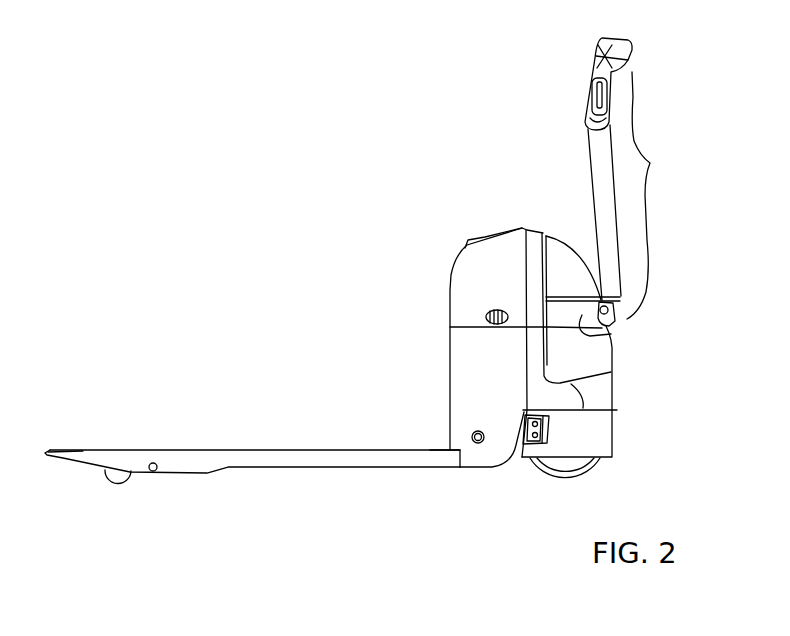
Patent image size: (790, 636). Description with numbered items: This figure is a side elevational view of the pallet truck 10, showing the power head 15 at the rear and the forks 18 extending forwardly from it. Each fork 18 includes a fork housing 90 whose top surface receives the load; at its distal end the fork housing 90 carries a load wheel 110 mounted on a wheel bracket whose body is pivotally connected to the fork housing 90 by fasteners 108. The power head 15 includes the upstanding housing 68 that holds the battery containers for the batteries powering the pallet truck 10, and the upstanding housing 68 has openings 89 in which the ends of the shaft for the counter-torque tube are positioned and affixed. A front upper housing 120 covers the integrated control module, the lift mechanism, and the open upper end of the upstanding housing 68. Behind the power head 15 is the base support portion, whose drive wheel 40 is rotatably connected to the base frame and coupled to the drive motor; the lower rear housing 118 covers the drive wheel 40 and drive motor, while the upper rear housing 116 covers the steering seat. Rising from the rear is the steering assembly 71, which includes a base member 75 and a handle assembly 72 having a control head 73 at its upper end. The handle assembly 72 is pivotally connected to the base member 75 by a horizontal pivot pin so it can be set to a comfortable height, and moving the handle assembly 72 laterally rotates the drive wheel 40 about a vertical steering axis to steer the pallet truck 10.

The pallet truck 10 is at (661, 108).
The power head 15 is at (466, 470).
The forks 18 is at (240, 471).
The drive wheel 40 is at (560, 467).
The upstanding housing 68 is at (467, 368).
The steering assembly 71 is at (653, 195).
The handle assembly 72 is at (595, 155).
The control head 73 is at (588, 60).
The base member 75 is at (613, 332).
The openings 89 is at (479, 444).
The fork housing 90 is at (287, 457).
The fasteners 108 is at (155, 473).
The load wheel 110 is at (115, 478).
The upper rear housing 116 is at (566, 262).
The lower rear housing 118 is at (597, 353).
The front upper housing 120 is at (458, 280).